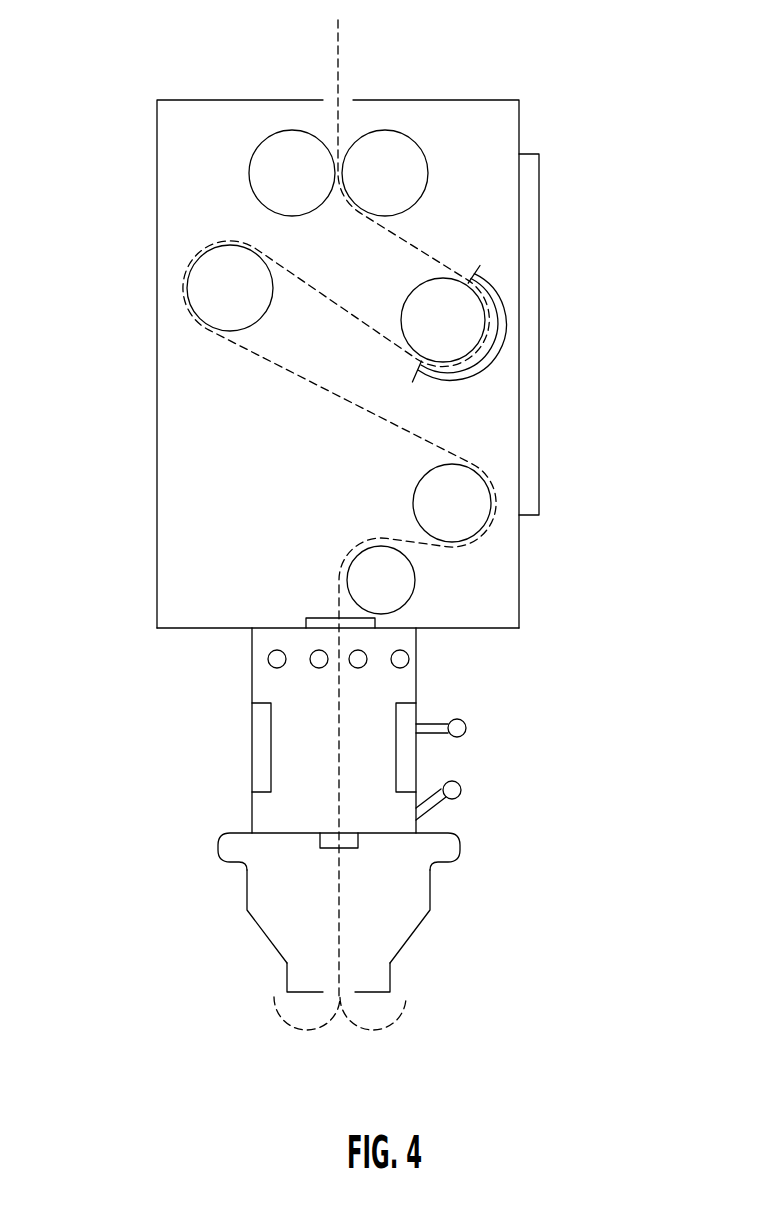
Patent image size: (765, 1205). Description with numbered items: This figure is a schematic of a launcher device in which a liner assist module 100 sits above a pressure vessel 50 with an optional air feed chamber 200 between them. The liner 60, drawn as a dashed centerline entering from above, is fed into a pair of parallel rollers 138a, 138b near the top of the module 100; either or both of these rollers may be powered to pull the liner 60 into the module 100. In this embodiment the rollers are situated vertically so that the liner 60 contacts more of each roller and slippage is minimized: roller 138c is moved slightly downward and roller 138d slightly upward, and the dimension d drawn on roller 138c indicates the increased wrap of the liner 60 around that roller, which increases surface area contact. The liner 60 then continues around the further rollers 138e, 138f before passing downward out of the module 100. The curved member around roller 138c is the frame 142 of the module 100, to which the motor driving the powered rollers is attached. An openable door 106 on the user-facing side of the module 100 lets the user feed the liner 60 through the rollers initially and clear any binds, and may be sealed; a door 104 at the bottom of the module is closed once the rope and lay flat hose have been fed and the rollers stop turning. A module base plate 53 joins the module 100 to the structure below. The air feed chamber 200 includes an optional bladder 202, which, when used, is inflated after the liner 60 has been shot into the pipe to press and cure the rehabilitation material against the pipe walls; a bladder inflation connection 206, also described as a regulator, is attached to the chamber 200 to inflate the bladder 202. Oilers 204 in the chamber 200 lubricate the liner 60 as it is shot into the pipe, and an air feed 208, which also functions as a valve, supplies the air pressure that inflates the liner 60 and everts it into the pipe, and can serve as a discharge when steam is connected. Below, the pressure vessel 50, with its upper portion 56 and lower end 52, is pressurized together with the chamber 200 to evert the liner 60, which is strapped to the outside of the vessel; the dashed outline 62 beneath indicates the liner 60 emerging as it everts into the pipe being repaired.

The liner assist module 100 is at (540, 107).
The liner 60 is at (338, 77).
The roller 138a is at (417, 142).
The roller 138b is at (250, 168).
The roller 138c is at (465, 333).
The roller 138d is at (187, 270).
The roller 138e is at (433, 493).
The roller 138f is at (353, 580).
The frame 142 is at (483, 247).
The dimension d is at (483, 364).
The openable door 106 is at (540, 506).
The door 104 is at (377, 625).
The module base plate 53 is at (468, 630).
The air feed chamber 200 is at (252, 692).
The bladder 202 is at (405, 715).
The oilers 204 is at (268, 657).
The bladder inflation connection 206 is at (466, 728).
The air feed 208 is at (458, 783).
The base flange 56 is at (462, 848).
The pressure vessel 50 is at (413, 916).
The nozzle opening 52 is at (372, 994).
The film bag / discharge 62 is at (280, 1016).